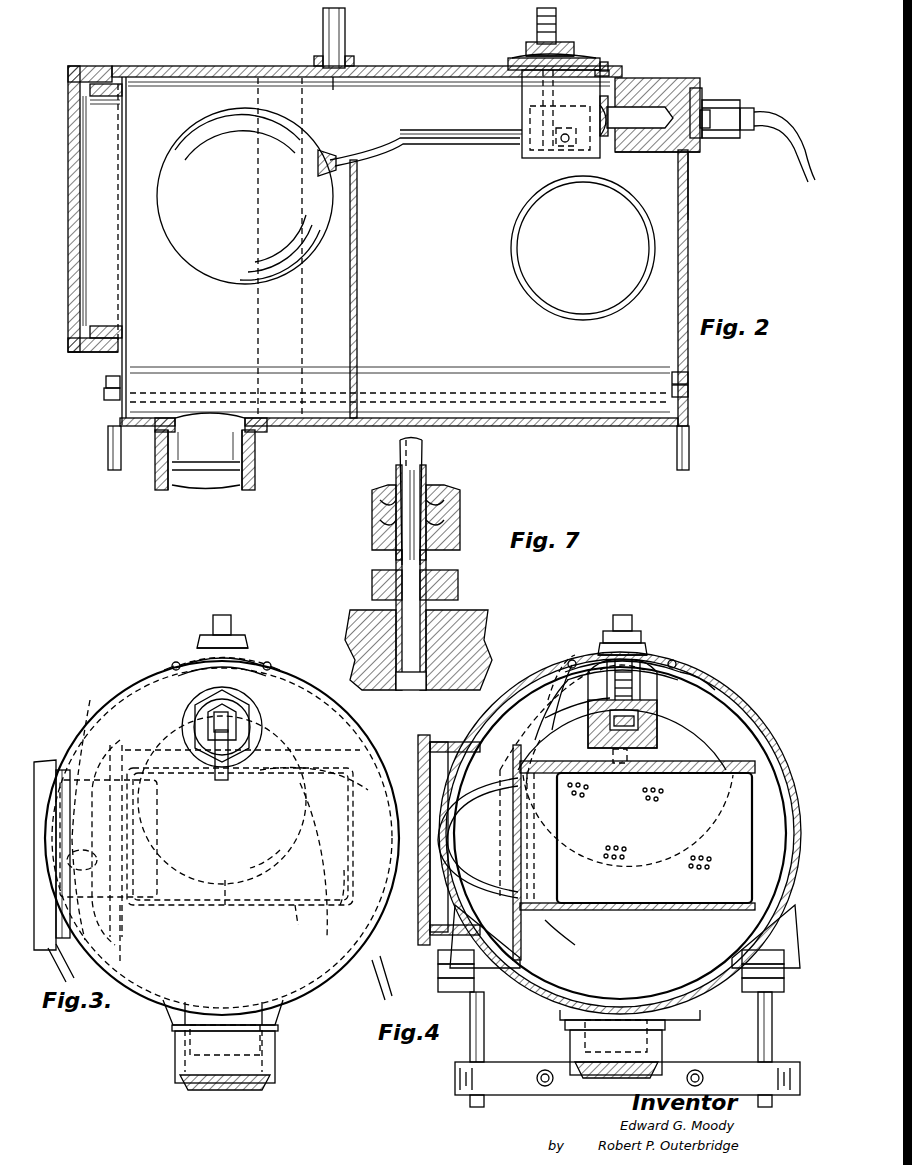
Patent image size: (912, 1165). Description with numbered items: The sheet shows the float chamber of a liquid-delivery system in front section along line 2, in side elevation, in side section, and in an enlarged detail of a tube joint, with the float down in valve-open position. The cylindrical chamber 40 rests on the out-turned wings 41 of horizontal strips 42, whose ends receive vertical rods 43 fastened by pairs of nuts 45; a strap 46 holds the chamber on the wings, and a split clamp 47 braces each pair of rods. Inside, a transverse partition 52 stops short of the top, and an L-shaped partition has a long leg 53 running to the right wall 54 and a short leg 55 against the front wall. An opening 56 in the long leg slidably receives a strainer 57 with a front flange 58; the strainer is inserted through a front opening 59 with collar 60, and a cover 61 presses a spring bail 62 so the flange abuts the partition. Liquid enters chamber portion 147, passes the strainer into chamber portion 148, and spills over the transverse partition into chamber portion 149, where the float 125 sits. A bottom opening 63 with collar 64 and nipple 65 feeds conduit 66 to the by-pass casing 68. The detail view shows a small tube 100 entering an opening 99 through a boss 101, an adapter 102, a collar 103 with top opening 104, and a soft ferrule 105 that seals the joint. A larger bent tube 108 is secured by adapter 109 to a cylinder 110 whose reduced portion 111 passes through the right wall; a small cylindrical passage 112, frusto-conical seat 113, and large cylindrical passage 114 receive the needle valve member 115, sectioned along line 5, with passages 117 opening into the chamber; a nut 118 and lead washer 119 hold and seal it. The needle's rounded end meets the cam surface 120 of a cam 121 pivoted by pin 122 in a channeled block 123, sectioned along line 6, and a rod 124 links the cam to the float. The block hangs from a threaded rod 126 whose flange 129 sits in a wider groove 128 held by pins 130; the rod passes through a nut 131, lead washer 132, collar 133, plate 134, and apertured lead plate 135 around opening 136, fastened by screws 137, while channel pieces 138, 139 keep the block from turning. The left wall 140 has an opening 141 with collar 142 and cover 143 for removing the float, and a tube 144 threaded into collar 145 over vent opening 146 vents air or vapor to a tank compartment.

In FIG. 2, the chamber 40 is at (172, 66).
In FIG. 3, the chamber 40 is at (288, 962).
In FIG. 4, the chamber 40 is at (728, 690).
In FIG. 4, the wings 41 is at (522, 962).
In FIG. 2, the horizontal strips 42 is at (103, 395).
In FIG. 4, the horizontal strips 42 is at (440, 995).
In FIG. 2, the vertical rods 43 is at (108, 447).
In FIG. 4, the vertical rods 43 is at (480, 1040).
In FIG. 2, the nuts 45 is at (108, 405).
In FIG. 4, the nuts 45 is at (438, 964).
In FIG. 2, the strap 46 is at (258, 66).
In FIG. 3, the strap 46 is at (112, 700).
In FIG. 4, the strap 46 is at (738, 705).
In FIG. 4, the split clamp 47 is at (522, 1082).
In FIG. 2, the transverse partition 52 is at (358, 270).
In FIG. 3, the transverse partition 52 is at (375, 765).
In FIG. 4, the transverse partition 52 is at (735, 745).
In FIG. 3, the long leg 53 is at (124, 946).
In FIG. 4, the long leg 53 is at (521, 940).
In FIG. 2, the right wall 54 is at (689, 270).
In FIG. 3, the right wall 54 is at (292, 1012).
In FIG. 3, the short leg 55 is at (92, 705).
In FIG. 4, the short leg 55 is at (503, 740).
In FIG. 4, the opening 56 is at (512, 925).
In FIG. 2, the strainer 57 is at (520, 280).
In FIG. 3, the strainer 57 is at (242, 846).
In FIG. 4, the strainer 57 is at (670, 905).
In FIG. 3, the front flange 58 is at (135, 785).
In FIG. 4, the front flange 58 is at (518, 890).
In FIG. 3, the front opening 59 is at (72, 740).
In FIG. 4, the front opening 59 is at (466, 742).
In FIG. 3, the collar 60 is at (42, 760).
In FIG. 4, the collar 60 is at (450, 735).
In FIG. 3, the cover 61 is at (52, 955).
In FIG. 4, the cover 61 is at (418, 920).
In FIG. 3, the spring bail 62 is at (93, 780).
In FIG. 4, the spring bail 62 is at (485, 782).
In FIG. 2, the opening 63 is at (200, 410).
In FIG. 2, the collar 64 is at (250, 440).
In FIG. 3, the collar 64 is at (176, 1030).
In FIG. 4, the collar 64 is at (570, 1030).
In FIG. 2, the nipple 65 is at (205, 452).
In FIG. 3, the nipple 65 is at (270, 1035).
In FIG. 4, the nipple 65 is at (665, 1018).
In FIG. 2, the conduit 66 is at (158, 485).
In FIG. 3, the conduit 66 is at (180, 1070).
In FIG. 4, the conduit 66 is at (580, 1070).
In FIG. 7, the by-pass casing 68 is at (352, 665).
In FIG. 7, the opening 99 is at (410, 686).
In FIG. 7, the tube 100 is at (424, 452).
In FIG. 7, the boss 101 is at (462, 622).
In FIG. 7, the adapter 102 is at (460, 585).
In FIG. 7, the collar 103 is at (462, 515).
In FIG. 7, the top opening 104 is at (428, 480).
In FIG. 7, the ferrule 105 is at (440, 505).
In FIG. 2, the tube 108 is at (792, 145).
In FIG. 3, the tube 108 is at (216, 775).
In FIG. 2, the adapter 109 is at (748, 110).
In FIG. 2, the cylinder 110 is at (650, 78).
In FIG. 2, the reduced portion 111 is at (730, 100).
In FIG. 3, the reduced portion 111 is at (232, 735).
In FIG. 2, the small cylindrical passage 112 is at (708, 138).
In FIG. 2, the frusto-conical seat 113 is at (690, 88).
In FIG. 2, the large cylindrical passage 114 is at (632, 156).
In FIG. 2, the needle valve member 115 is at (640, 117).
In FIG. 2, the passages 117 is at (672, 95).
In FIG. 2, the nut 118 is at (700, 88).
In FIG. 3, the nut 118 is at (240, 735).
In FIG. 2, the lead washer 119 is at (690, 160).
In FIG. 3, the lead washer 119 is at (258, 712).
In FIG. 2, the cam surface 120 is at (604, 140).
In FIG. 2, the cam 121 is at (575, 146).
In FIG. 4, the cam 121 is at (640, 772).
In FIG. 2, the pin 122 is at (556, 146).
In FIG. 4, the pin 122 is at (637, 829).
In FIG. 2, the channeled block 123 is at (522, 150).
In FIG. 4, the channeled block 123 is at (660, 712).
In FIG. 2, the rod 124 is at (393, 147).
In FIG. 4, the rod 124 is at (639, 826).
In FIG. 2, the float 125 is at (178, 236).
In FIG. 3, the float 125 is at (275, 860).
In FIG. 4, the float 125 is at (690, 720).
In FIG. 2, the threaded rod 126 is at (557, 28).
In FIG. 3, the threaded rod 126 is at (214, 618).
In FIG. 4, the threaded rod 126 is at (621, 615).
In FIG. 2, the wider groove 128 is at (520, 116).
In FIG. 4, the flange 129 is at (597, 705).
In FIG. 2, the pins 130 is at (568, 125).
In FIG. 2, the nut 131 is at (530, 44).
In FIG. 3, the nut 131 is at (236, 636).
In FIG. 4, the nut 131 is at (640, 636).
In FIG. 2, the lead washer 132 is at (528, 52).
In FIG. 3, the lead washer 132 is at (232, 648).
In FIG. 4, the lead washer 132 is at (645, 655).
In FIG. 2, the collar 133 is at (515, 57).
In FIG. 3, the collar 133 is at (250, 658).
In FIG. 4, the collar 133 is at (600, 660).
In FIG. 2, the plate 134 is at (585, 58).
In FIG. 3, the plate 134 is at (190, 660).
In FIG. 4, the plate 134 is at (650, 668).
In FIG. 2, the apertured lead plate 135 is at (610, 72).
In FIG. 3, the apertured lead plate 135 is at (166, 666).
In FIG. 4, the apertured lead plate 135 is at (548, 698).
In FIG. 2, the opening 136 is at (520, 85).
In FIG. 2, the screws 137 is at (605, 62).
In FIG. 3, the screws 137 is at (176, 660).
In FIG. 4, the screws 137 is at (572, 660).
In FIG. 4, the channel piece 138 is at (577, 706).
In FIG. 2, the channel piece 139 is at (640, 75).
In FIG. 4, the channel piece 139 is at (690, 670).
In FIG. 2, the left wall 140 is at (120, 72).
In FIG. 4, the left wall 140 is at (755, 712).
In FIG. 2, the opening 141 is at (125, 135).
In FIG. 3, the opening 141 is at (325, 910).
In FIG. 4, the opening 141 is at (545, 690).
In FIG. 2, the collar 142 is at (75, 352).
In FIG. 2, the cover 143 is at (70, 250).
In FIG. 3, the cover 143 is at (225, 908).
In FIG. 4, the cover 143 is at (535, 735).
In FIG. 2, the tube 144 is at (344, 35).
In FIG. 2, the collar 145 is at (352, 60).
In FIG. 2, the vent opening 146 is at (333, 88).
In FIG. 3, the chamber portion 147 is at (82, 860).
In FIG. 4, the chamber portion 147 is at (578, 948).
In FIG. 2, the chamber portion 148 is at (650, 306).
In FIG. 3, the chamber portion 148 is at (175, 975).
In FIG. 4, the chamber portion 148 is at (768, 790).
In FIG. 2, the chamber portion 149 is at (333, 312).
In FIG. 3, the section line 2 is at (200, 635).
In FIG. 2, the section line 5 is at (698, 78).
In FIG. 2, the section line 6 is at (598, 88).